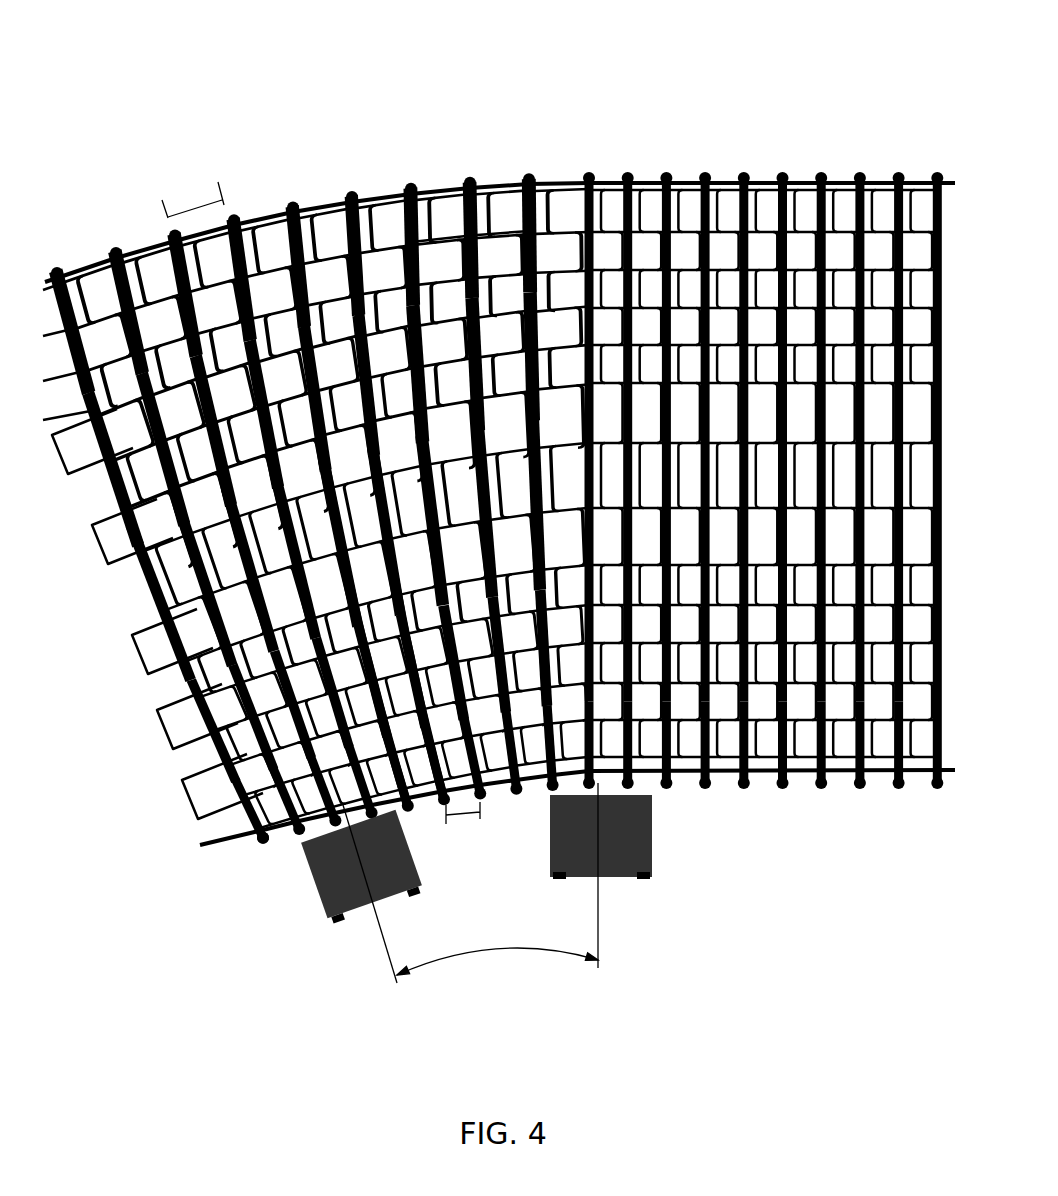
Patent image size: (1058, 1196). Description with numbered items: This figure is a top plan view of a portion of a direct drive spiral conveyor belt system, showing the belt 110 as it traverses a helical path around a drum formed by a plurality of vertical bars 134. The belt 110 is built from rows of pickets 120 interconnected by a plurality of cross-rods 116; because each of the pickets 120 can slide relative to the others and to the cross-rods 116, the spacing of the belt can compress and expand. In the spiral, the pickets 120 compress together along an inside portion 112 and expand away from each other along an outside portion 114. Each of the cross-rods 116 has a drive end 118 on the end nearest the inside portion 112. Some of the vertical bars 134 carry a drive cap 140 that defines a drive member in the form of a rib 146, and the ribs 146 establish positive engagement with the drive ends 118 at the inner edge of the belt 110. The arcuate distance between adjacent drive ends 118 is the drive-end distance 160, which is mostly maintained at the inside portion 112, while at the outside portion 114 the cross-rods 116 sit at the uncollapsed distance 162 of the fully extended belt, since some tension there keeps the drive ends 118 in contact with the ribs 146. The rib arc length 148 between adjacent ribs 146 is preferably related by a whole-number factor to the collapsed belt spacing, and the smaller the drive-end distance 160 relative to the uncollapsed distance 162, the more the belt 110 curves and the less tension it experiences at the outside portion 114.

The belt 110 is at (788, 142).
The inside portion 112 is at (765, 812).
The outside portion 114 is at (616, 136).
The cross-rods 116 is at (360, 240).
The drive end 118 is at (258, 842).
The pickets 120 is at (503, 232).
The vertical bars 134 is at (351, 893).
The drive cap 140 is at (315, 893).
The rib 146 is at (653, 830).
The rib arc length 148 is at (500, 953).
The drive-end distance 160 is at (463, 814).
The uncollapsed distance 162 is at (190, 203).